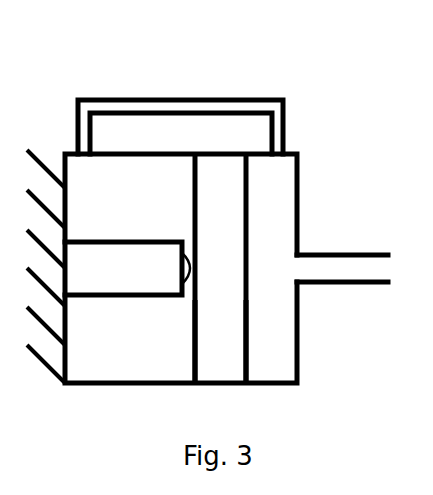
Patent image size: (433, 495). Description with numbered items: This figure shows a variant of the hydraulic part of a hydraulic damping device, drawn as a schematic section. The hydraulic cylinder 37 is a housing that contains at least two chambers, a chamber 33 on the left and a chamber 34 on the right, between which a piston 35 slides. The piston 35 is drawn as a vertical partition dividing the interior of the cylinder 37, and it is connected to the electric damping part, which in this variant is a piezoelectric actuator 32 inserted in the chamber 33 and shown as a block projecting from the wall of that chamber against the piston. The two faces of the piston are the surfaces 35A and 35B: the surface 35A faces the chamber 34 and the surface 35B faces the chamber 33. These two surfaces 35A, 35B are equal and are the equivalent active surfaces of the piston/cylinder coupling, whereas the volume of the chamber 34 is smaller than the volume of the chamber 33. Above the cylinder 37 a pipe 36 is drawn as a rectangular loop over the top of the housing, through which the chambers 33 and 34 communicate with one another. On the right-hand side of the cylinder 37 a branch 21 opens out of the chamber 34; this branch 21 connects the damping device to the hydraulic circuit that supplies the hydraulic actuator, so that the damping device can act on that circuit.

The branch 21 is at (333, 254).
The piezoelectric actuator 32 is at (127, 268).
The chamber 33 is at (130, 268).
The chamber 34 is at (272, 268).
The piston 35 is at (220, 268).
The surface 35A is at (249, 355).
The surface 35B is at (190, 362).
The pipe 36 is at (193, 107).
The hydraulic cylinder 37 is at (299, 193).